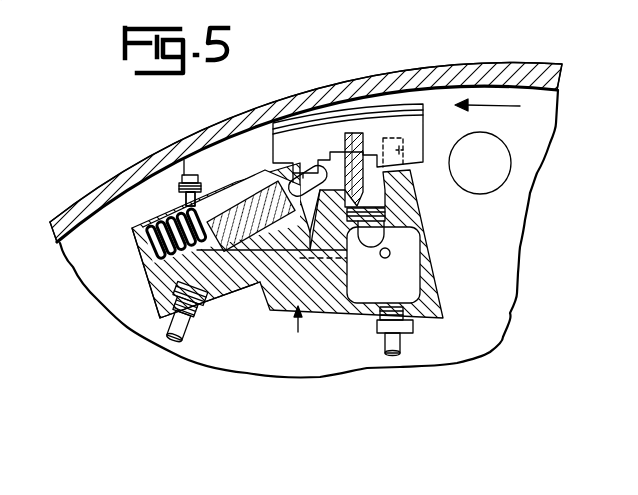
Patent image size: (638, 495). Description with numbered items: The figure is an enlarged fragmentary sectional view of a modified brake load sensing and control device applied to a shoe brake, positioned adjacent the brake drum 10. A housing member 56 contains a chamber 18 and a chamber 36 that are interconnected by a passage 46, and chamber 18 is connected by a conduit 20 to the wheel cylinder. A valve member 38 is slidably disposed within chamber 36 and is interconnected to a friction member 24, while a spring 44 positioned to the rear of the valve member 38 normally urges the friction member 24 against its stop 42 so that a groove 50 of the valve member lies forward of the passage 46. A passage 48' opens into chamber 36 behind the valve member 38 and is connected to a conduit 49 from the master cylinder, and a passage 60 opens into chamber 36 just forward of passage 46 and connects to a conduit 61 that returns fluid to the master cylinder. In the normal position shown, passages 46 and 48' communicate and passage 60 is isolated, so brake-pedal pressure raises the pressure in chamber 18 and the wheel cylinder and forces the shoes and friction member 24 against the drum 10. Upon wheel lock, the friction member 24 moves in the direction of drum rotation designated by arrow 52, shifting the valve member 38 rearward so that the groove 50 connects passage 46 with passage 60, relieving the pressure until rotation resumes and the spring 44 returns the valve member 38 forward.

The brake drum 10 is at (96, 199).
The chamber 18 is at (408, 266).
The conduit 20 is at (402, 341).
The frictional member 24 is at (297, 153).
The chamber 36 is at (152, 225).
The valve member 38 is at (240, 200).
The stop 42 is at (403, 150).
The spring 44 is at (147, 253).
The passage 46 is at (252, 255).
The passage 48' is at (162, 299).
The conduit 49 is at (207, 335).
The groove 50 is at (190, 186).
The arrow 52 is at (502, 108).
The housing member 56 is at (295, 335).
The passage 60 is at (190, 200).
The conduit 61 is at (184, 160).